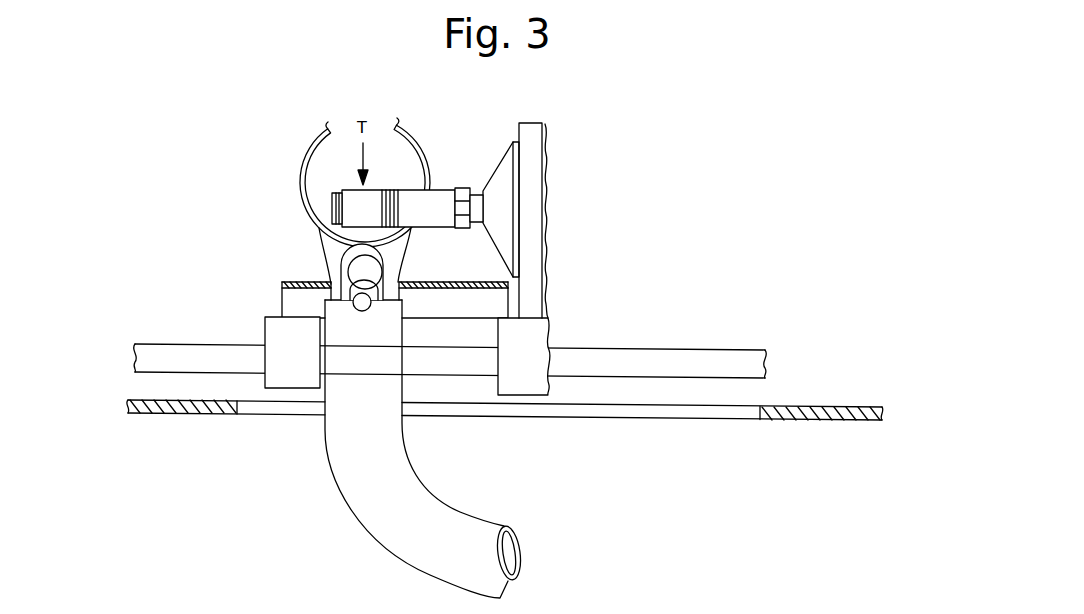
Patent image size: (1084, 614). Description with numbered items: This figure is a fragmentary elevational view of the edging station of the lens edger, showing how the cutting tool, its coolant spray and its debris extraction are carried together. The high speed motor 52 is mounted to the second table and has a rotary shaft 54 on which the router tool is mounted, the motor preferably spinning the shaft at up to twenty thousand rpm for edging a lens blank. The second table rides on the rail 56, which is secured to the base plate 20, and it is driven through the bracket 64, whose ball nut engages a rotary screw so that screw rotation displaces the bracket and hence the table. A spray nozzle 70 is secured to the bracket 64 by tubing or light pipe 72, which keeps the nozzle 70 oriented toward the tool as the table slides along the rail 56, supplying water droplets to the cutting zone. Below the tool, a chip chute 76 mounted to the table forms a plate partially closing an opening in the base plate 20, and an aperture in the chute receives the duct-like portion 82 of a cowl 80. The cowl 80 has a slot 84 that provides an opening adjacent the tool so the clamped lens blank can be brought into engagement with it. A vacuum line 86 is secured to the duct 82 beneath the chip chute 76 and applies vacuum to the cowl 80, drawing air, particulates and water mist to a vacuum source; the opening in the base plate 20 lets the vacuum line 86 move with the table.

The base plate 20 is at (818, 407).
The high speed motor 52 is at (548, 163).
The rotary shaft 54 is at (479, 195).
The rail 56 is at (190, 344).
The bracket 64 is at (548, 327).
The spray nozzle 70 is at (338, 261).
The tubing or light pipe 72 is at (355, 292).
The chip chute 76 is at (433, 281).
The cowl 80 is at (300, 169).
The duct-like portion 82 is at (326, 244).
The slot 84 is at (406, 136).
The vacuum line 86 is at (413, 496).